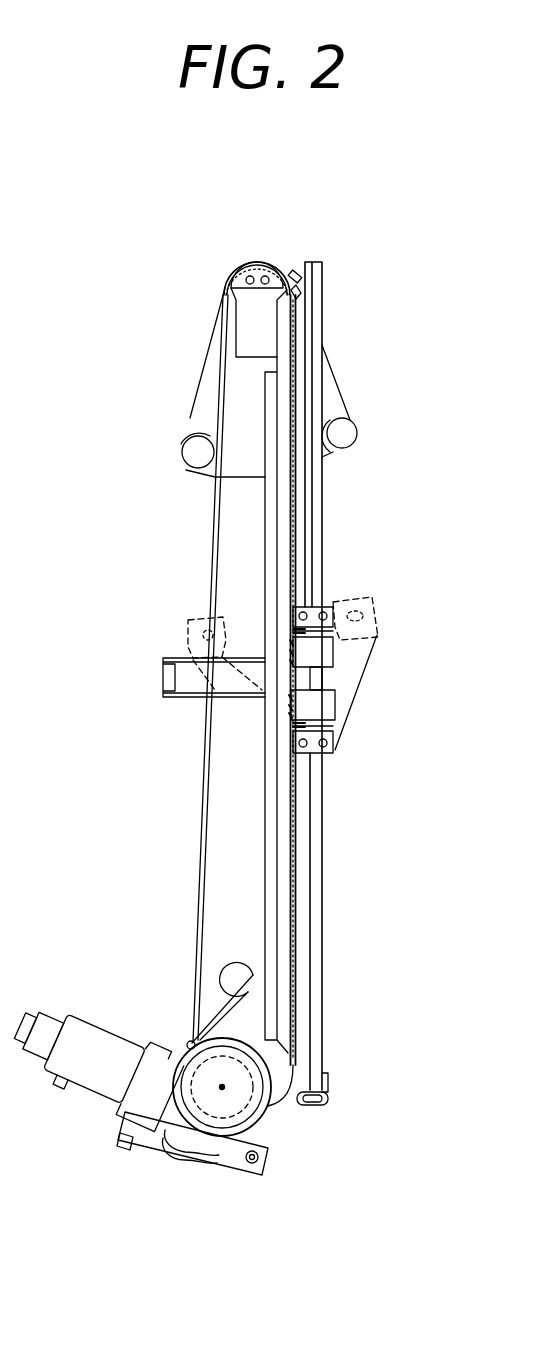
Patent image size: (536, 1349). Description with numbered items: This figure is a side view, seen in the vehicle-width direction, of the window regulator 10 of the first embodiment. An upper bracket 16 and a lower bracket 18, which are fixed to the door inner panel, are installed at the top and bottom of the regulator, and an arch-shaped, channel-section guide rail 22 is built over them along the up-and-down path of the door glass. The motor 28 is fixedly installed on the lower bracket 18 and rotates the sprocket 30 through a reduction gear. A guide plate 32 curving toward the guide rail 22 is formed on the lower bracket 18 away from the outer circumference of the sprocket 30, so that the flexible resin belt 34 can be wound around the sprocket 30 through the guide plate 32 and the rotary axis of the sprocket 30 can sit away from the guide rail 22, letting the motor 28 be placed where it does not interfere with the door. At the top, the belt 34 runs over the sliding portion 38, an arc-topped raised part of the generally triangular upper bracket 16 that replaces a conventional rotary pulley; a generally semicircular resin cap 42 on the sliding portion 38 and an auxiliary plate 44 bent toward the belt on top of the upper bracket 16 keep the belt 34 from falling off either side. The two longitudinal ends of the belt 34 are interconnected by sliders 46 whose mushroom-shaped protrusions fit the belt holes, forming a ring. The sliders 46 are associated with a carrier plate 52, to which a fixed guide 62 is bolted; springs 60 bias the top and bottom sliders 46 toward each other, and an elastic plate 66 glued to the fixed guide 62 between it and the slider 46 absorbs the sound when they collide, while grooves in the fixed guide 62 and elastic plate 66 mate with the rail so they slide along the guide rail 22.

The window regulator 10 is at (380, 601).
The upper bracket 16 is at (340, 393).
The lower bracket 18 is at (235, 993).
The guide rail 22 is at (320, 853).
The motor 28 is at (117, 1050).
The sprocket 30 is at (215, 1055).
The guide plate 32 is at (302, 1062).
The belt 34 is at (222, 333).
The sliding portion 38 is at (242, 294).
The resin cap 42 is at (257, 274).
The auxiliary plate 44 is at (293, 267).
The slider 46 is at (325, 650).
The carrier plate 52 is at (365, 600).
The spring 60 is at (293, 640).
The fixed guide 62 is at (310, 604).
The elastic plate 66 is at (290, 620).